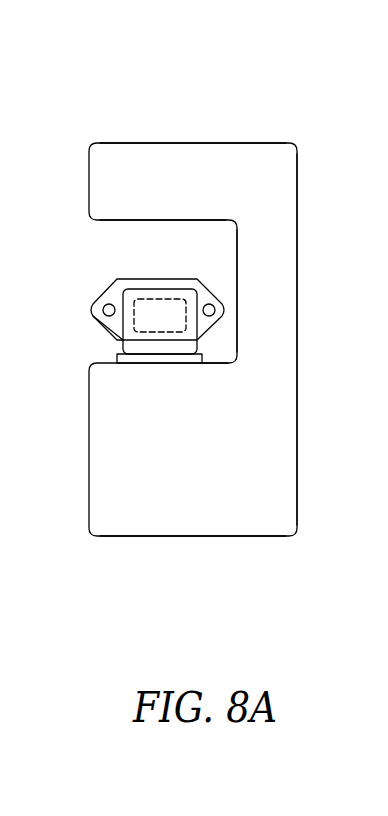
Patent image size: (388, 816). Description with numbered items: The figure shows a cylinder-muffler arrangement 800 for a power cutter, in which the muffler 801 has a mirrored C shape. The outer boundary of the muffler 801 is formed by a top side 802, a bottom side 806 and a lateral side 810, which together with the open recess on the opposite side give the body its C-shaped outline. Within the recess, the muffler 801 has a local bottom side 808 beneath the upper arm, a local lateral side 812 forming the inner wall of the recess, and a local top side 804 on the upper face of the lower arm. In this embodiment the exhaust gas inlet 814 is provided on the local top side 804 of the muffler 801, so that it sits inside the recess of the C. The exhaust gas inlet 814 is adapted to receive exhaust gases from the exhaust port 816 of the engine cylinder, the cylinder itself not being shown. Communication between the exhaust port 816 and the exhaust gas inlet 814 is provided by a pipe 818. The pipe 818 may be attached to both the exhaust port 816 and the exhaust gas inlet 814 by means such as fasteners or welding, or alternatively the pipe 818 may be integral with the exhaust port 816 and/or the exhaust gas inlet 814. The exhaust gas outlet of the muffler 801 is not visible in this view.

The cylinder-muffler arrangement 800 is at (67, 97).
The muffler 801 is at (194, 143).
The top side 802 is at (125, 143).
The local top side 804 is at (213, 362).
The bottom side 806 is at (192, 536).
The local bottom side 808 is at (160, 220).
The lateral side 810 is at (297, 412).
The local lateral side 812 is at (237, 291).
The exhaust gas inlet 814 is at (118, 357).
The exhaust port 816 is at (142, 315).
The pipe 818 is at (123, 341).